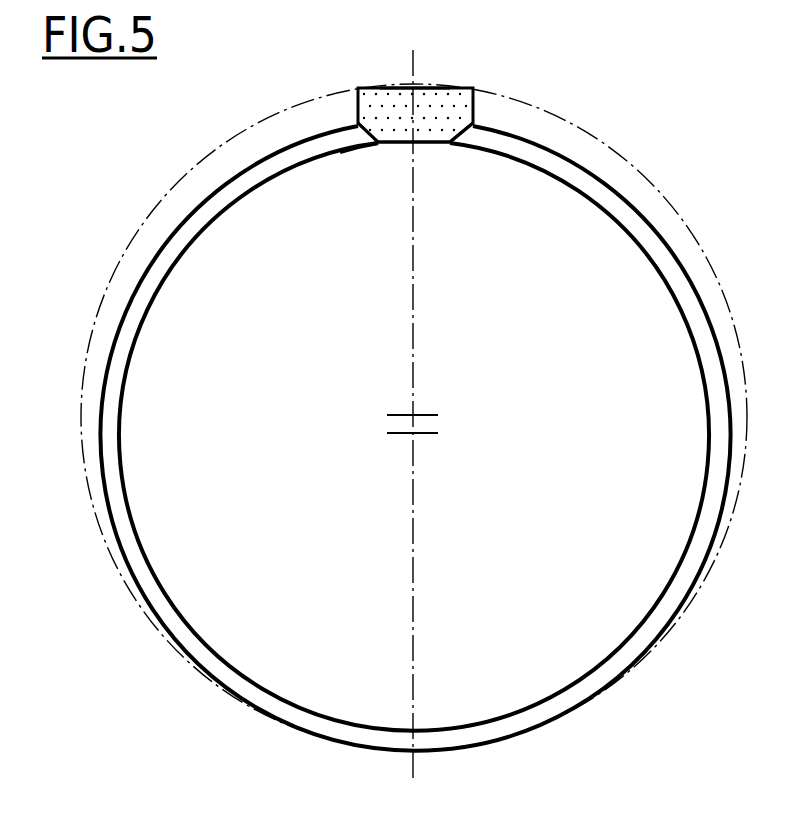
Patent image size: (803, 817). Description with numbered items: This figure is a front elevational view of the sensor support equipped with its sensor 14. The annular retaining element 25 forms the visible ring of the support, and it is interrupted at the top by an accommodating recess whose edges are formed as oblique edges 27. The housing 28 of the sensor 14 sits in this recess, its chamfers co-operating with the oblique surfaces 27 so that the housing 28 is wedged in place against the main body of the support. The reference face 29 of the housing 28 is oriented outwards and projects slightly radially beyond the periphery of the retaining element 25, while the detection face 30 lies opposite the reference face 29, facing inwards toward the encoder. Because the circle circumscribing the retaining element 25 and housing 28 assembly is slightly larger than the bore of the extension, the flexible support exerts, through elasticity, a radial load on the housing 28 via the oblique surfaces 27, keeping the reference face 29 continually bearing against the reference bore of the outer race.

The sensor 14 is at (435, 143).
The retaining element 25 is at (502, 138).
The oblique edges 27 is at (370, 130).
The housing 28 is at (423, 113).
The reference face 29 is at (404, 86).
The detection face 30 is at (395, 146).